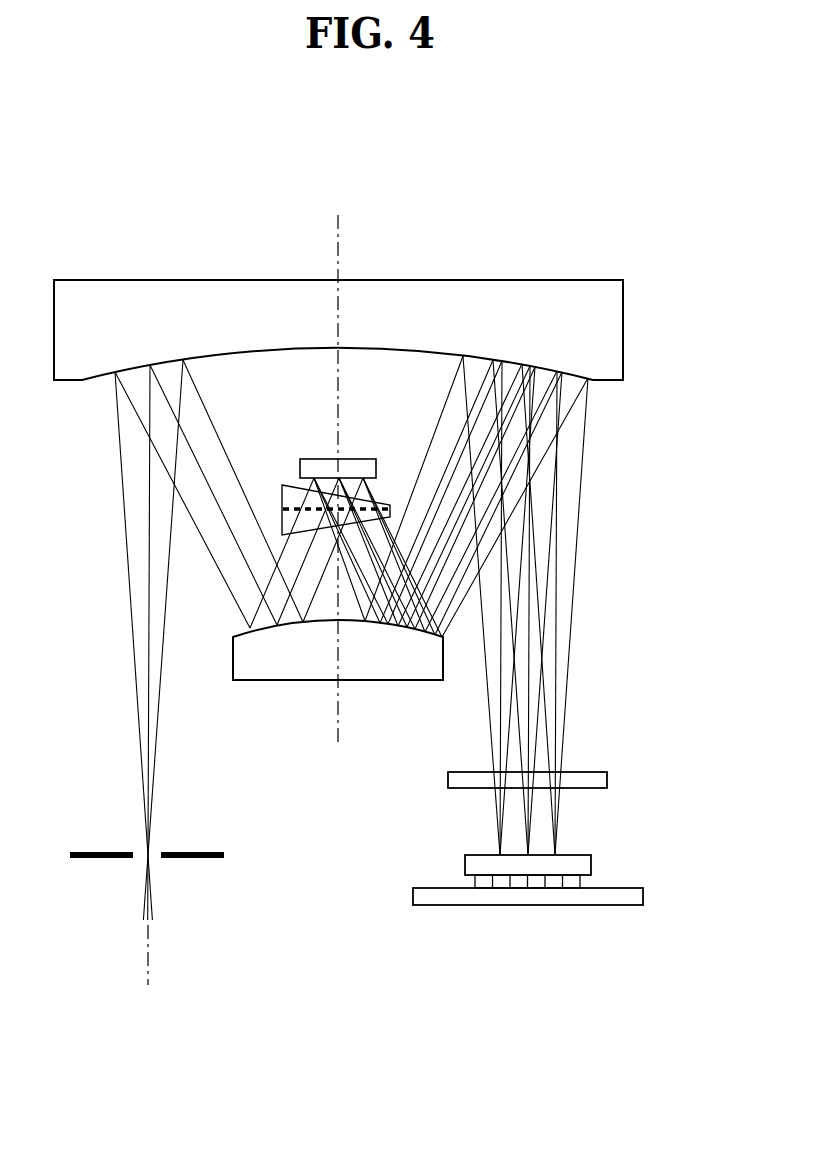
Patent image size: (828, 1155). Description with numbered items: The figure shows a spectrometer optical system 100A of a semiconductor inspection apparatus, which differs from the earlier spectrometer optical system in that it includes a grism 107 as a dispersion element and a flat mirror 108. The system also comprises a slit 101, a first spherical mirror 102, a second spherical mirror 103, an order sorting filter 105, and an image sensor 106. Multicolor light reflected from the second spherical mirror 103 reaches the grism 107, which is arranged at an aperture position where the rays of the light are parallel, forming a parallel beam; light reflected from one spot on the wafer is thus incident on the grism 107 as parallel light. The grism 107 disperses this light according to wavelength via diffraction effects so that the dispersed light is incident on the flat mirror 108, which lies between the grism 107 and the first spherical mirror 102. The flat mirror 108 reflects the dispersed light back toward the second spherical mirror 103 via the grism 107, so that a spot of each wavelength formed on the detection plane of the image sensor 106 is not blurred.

The spectrometer optical system 100A is at (205, 164).
The slit 101 is at (200, 851).
The first spherical mirror 102 is at (567, 285).
The second spherical mirror 103 is at (410, 681).
The order sorting filter 105 is at (608, 780).
The image sensor 106 is at (610, 864).
The grism 107 is at (285, 483).
The flat mirror 108 is at (372, 459).